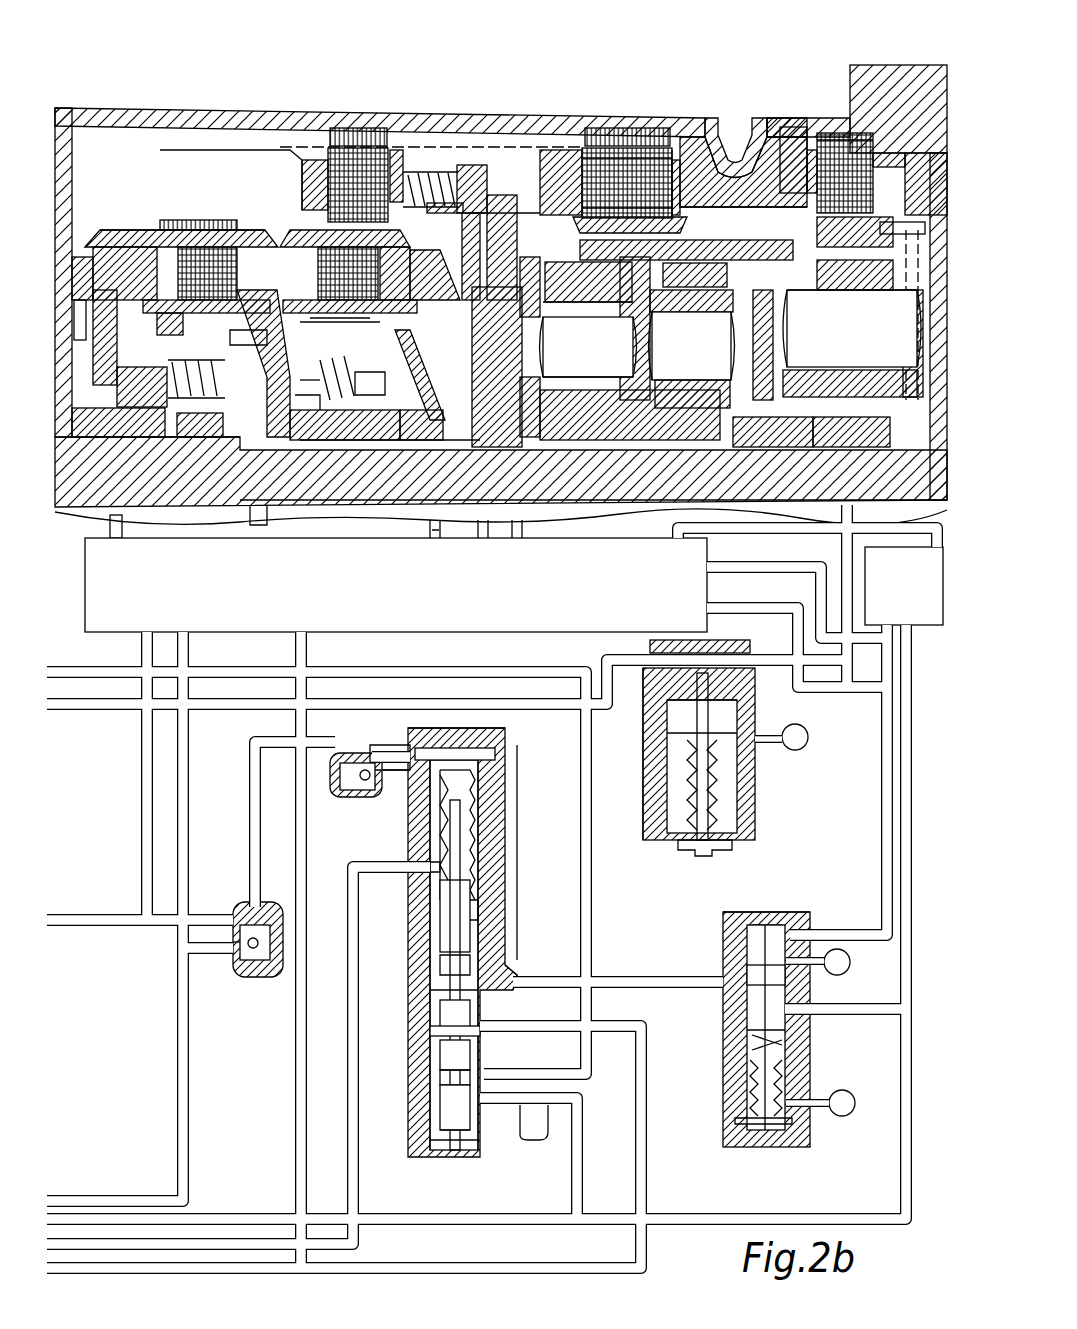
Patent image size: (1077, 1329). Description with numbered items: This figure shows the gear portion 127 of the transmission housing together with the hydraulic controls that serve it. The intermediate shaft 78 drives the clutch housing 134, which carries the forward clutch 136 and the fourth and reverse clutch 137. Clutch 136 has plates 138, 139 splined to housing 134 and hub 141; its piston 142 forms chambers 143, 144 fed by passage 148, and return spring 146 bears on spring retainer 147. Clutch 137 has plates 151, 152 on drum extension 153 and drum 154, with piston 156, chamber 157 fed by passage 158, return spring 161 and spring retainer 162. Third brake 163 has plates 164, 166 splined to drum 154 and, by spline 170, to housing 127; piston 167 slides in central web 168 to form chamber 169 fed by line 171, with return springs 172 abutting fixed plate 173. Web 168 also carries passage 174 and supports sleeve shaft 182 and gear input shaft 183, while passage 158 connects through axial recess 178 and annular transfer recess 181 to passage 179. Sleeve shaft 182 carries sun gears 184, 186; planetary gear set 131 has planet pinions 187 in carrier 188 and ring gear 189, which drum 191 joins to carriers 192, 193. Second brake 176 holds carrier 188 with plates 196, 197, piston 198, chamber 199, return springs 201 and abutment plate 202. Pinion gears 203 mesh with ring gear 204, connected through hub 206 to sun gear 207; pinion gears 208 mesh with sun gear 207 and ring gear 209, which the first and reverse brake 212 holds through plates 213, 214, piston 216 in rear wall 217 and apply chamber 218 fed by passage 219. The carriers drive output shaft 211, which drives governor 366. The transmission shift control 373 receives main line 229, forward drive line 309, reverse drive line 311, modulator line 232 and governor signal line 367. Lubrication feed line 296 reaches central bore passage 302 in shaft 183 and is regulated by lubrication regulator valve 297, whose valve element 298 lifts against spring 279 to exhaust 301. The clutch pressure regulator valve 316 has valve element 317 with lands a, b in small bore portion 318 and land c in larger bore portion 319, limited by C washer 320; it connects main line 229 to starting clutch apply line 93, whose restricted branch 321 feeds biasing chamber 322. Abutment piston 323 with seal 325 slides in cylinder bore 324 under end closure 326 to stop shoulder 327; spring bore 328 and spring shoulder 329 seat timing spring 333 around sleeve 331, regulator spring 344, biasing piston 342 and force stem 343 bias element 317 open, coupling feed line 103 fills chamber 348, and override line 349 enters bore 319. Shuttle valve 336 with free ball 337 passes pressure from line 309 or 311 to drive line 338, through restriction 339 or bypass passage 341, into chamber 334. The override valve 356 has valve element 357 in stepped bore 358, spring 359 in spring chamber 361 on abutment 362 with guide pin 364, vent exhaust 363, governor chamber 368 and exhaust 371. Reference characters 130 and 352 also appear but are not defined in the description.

The transmission 130 is at (178, 161).
The first and reverse brake 212 is at (830, 72).
The apply chamber 218 is at (915, 150).
The rear wall 217 is at (912, 222).
The plates 196 is at (720, 160).
The second brake 176 is at (682, 110).
The plates 197 is at (698, 130).
The plates 213 is at (795, 127).
The piston 216 is at (860, 135).
The plates 214 is at (822, 150).
The third brake 163 is at (380, 96).
The plates 166 is at (336, 148).
The spline 170 is at (392, 148).
The fixed plate 173 is at (425, 140).
The return springs 172 is at (430, 172).
The piston 167 is at (468, 165).
The gear portion 127 is at (500, 195).
The central web 168 is at (552, 160).
The fluid chamber 199 is at (595, 148).
The piston 198 is at (618, 148).
The return springs 201 is at (640, 148).
The fixed spring abutment plate 202 is at (665, 148).
The fluid chamber 169 is at (500, 200).
The plates 164 is at (302, 170).
The clutch housing 134 is at (100, 236).
The plates 138 is at (190, 245).
The forward clutch 136 is at (214, 212).
The fourth and reverse clutch 137 is at (278, 224).
The drum 154 is at (300, 250).
The piston 142 is at (105, 275).
The cylinder fluid chamber 143 is at (108, 290).
The plates 152 is at (412, 270).
The planetary gear set 131 is at (522, 270).
The carrier 188 is at (552, 262).
The carrier 192 is at (690, 233).
The drum 191 is at (740, 240).
The carrier 193 is at (792, 232).
The ring gear 204 is at (790, 238).
The ring gear 209 is at (830, 250).
The plates 139 is at (200, 315).
The hub 141 is at (312, 315).
The drum extension 153 is at (340, 315).
The piston 156 is at (360, 320).
The spring retainer 147 is at (335, 358).
The plates 151 is at (360, 385).
The return spring 161 is at (330, 378).
The spring retainer 162 is at (330, 395).
The cylinder fluid chamber 144 is at (130, 345).
The return spring 146 is at (246, 360).
The fluid chamber 157 is at (420, 330).
The passage 179 is at (418, 372).
The planet pinions 187 is at (560, 305).
The ring gear 189 is at (610, 310).
The pinion gears 203 is at (700, 320).
The hub 206 is at (760, 355).
The pinion gears 208 is at (855, 300).
The passage 148 is at (175, 437).
The annular transfer recess 181 is at (400, 450).
The axial recess 178 is at (440, 452).
The sun gear 184 is at (575, 450).
The sun gear 186 is at (672, 450).
The sun gear 207 is at (768, 450).
The sleeve shaft 182 is at (618, 500).
The intermediate shaft 78 is at (170, 508).
The passage 158 is at (432, 532).
The passage 171 is at (478, 532).
The passage 174 is at (512, 532).
The central bore passage 302 is at (575, 520).
The gear input shaft 183 is at (712, 505).
The passage 219 is at (785, 525).
The transmission shift control 373 is at (565, 634).
The transmission output shaft 211 is at (937, 535).
The governor signal line 367 is at (760, 568).
The output shaft governor 366 is at (915, 625).
The main line 229 is at (880, 714).
The starting clutch apply line 93 is at (80, 670).
The lubrication feed line 296 is at (68, 712).
The forward drive line 309 is at (142, 645).
The reverse drive line 311 is at (190, 645).
The modulator line 232 is at (310, 645).
The coupling feed line 103 is at (345, 875).
The forward or reverse drive line 338 is at (248, 822).
The restriction 339 is at (350, 750).
The chamber 334 is at (392, 746).
The check valve bypass passage 341 is at (356, 792).
The sleeve 331 is at (410, 795).
The shuttle valve 336 is at (250, 977).
The free ball 337 is at (222, 950).
The clutch pressure regulator valve 316 is at (403, 1152).
The end closure 326 is at (505, 735).
The abutment piston 323 is at (490, 760).
The O ring seal 325 is at (480, 772).
The cylinder bore 324 is at (480, 786).
The stop shoulder 327 is at (478, 810).
The chamber 348 is at (478, 835).
The spring bore 328 is at (478, 862).
The spring shoulder 329 is at (478, 915).
The piston return and timing spring 333 is at (430, 862).
The regulator spring 344 is at (435, 875).
The coupling pressure biasing piston 342 is at (445, 912).
The stem 352 is at (440, 945).
The force stem 343 is at (470, 965).
The override line 349 is at (540, 980).
The larger diameter bore portion 319 is at (430, 1000).
The land c is at (440, 1015).
The land b is at (440, 1050).
The C washer 320 is at (478, 1060).
The valve element 317 is at (445, 1082).
The small bore portion 318 is at (445, 1108).
The land a is at (445, 1132).
The biasing chamber 322 is at (478, 1140).
The restricted branch 321 is at (540, 1135).
The lubrication regulator valve 297 is at (768, 843).
The valve element 298 is at (650, 766).
The spring 279 is at (690, 800).
The exhaust 301 is at (805, 748).
The override valve 356 is at (714, 1142).
The chamber 368 is at (765, 915).
The valve element 357 is at (747, 972).
The stepped bore 358 is at (785, 970).
The spring 359 is at (755, 1040).
The guide pin 364 is at (790, 1052).
The spring chamber 361 is at (750, 1065).
The abutment 362 is at (740, 1120).
The exhaust 371 is at (852, 962).
The vent exhaust 363 is at (852, 1094).